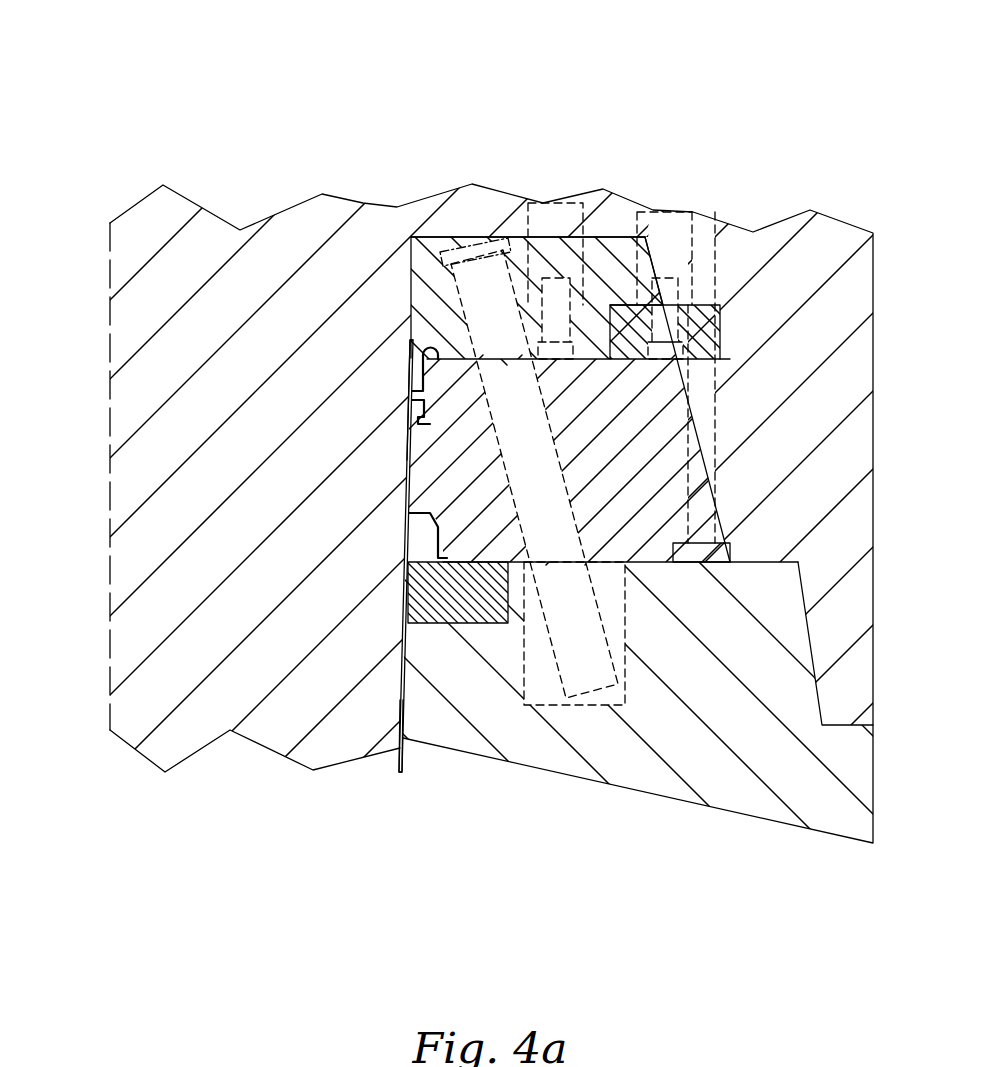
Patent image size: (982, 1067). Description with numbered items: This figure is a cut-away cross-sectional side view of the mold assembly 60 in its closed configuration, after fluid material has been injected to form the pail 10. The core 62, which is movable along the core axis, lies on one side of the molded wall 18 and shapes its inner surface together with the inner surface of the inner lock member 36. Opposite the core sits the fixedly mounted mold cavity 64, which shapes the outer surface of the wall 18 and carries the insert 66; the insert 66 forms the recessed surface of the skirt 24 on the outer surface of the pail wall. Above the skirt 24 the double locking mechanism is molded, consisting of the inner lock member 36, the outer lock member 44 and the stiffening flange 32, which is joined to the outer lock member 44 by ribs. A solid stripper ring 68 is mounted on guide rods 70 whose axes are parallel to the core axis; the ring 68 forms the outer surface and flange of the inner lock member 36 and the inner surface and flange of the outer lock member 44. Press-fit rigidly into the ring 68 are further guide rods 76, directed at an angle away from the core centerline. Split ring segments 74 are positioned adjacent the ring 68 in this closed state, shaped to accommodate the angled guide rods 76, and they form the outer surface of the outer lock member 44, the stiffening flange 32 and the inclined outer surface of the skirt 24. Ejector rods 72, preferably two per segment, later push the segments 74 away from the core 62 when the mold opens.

The pail 10 is at (393, 762).
The wall 18 is at (407, 773).
The skirt 24 is at (407, 482).
The stiffening flange 32 is at (410, 440).
The inner lock member 36 is at (410, 390).
The outer lock member 44 is at (415, 368).
The mold assembly 60 is at (431, 104).
The core 62 is at (257, 745).
The mold cavity 64 is at (657, 792).
The insert 66 is at (440, 623).
The stripper ring 68 is at (603, 237).
The guide rods 70 is at (530, 208).
The ejector rods 72 is at (693, 228).
The split ring segments 74 is at (652, 563).
The guide rods 76 is at (556, 648).